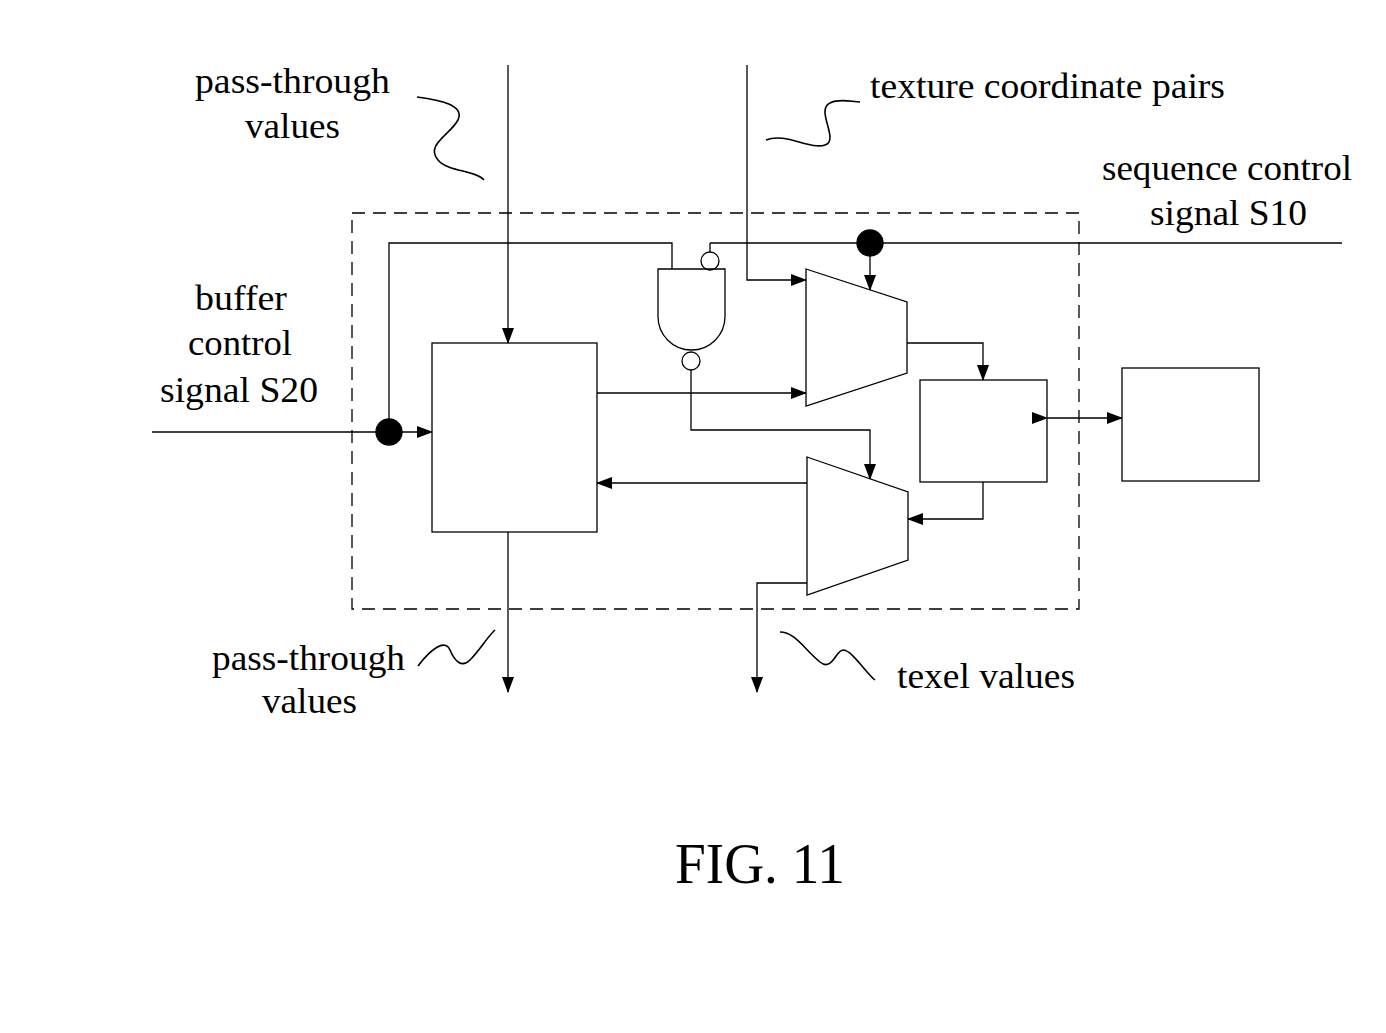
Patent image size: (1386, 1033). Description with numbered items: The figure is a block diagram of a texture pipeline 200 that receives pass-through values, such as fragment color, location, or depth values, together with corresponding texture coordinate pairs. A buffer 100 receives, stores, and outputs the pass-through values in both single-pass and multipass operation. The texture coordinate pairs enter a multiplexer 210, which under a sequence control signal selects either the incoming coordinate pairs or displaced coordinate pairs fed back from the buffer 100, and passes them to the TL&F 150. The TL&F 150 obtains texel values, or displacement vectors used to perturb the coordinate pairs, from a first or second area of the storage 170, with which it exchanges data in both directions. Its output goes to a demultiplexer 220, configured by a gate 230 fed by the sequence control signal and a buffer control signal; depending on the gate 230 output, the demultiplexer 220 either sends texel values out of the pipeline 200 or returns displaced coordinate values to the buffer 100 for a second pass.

The buffer 100 is at (514, 437).
The TL&F 150 is at (983, 431).
The storage 170 is at (1190, 424).
The pipeline 200 is at (715, 411).
The multiplexer 210 is at (856, 337).
The demultiplexer 220 is at (857, 526).
The gate 230 is at (691, 306).